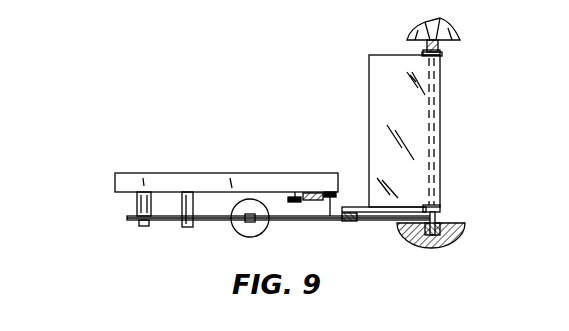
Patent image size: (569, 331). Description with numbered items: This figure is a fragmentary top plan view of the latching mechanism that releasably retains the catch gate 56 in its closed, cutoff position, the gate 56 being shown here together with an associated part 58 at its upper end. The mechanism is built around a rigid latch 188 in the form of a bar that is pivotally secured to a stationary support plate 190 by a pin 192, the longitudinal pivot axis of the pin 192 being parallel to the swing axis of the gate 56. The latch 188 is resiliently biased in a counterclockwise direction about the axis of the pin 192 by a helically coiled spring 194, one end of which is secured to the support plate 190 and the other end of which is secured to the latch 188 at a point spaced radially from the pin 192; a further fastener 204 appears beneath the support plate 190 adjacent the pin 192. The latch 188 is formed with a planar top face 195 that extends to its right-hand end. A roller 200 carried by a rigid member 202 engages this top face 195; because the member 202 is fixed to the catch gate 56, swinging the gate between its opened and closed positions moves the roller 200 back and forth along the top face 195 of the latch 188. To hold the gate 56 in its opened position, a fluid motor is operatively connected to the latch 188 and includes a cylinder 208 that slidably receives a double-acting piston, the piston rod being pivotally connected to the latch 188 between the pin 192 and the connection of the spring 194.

The catch gate 56 is at (423, 136).
The wing nut 58 is at (440, 50).
The latch 188 is at (166, 226).
The support plate 190 is at (218, 184).
The pin 192 is at (143, 226).
The spring 194 is at (304, 195).
The top face 195 is at (218, 222).
The roller 200 is at (352, 222).
The rigid member 202 is at (366, 214).
The post 204 is at (188, 229).
The cylinder 208 is at (265, 231).